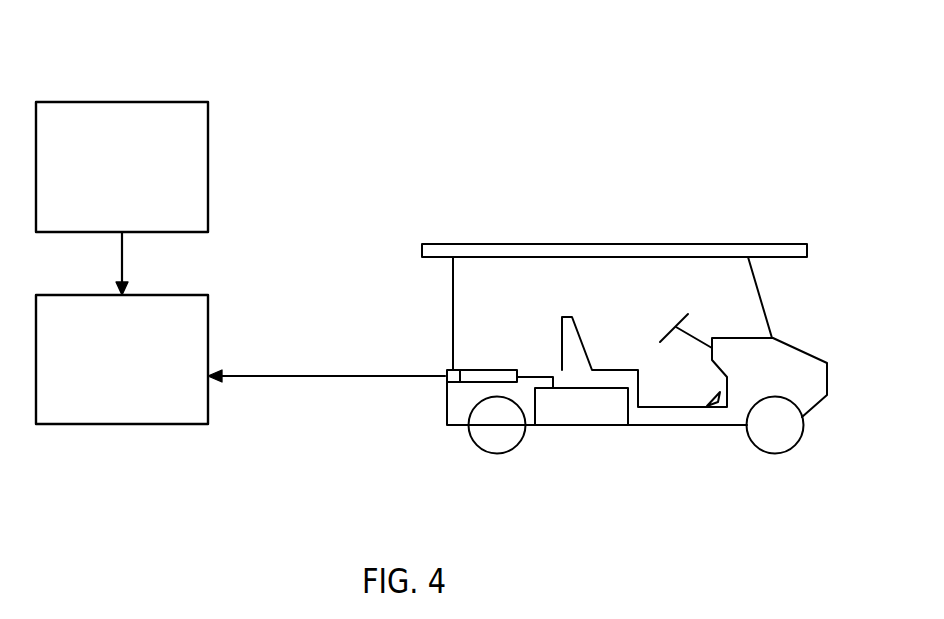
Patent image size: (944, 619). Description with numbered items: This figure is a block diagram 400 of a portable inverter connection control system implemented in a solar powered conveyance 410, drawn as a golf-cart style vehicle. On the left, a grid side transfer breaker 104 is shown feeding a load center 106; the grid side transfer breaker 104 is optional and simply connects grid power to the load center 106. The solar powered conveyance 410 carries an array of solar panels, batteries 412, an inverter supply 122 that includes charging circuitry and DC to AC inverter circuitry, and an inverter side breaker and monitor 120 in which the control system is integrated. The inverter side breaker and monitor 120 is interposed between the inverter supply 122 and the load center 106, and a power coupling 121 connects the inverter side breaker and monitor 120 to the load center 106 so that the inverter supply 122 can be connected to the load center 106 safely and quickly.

The block diagram 400 is at (486, 72).
The grid side transfer breaker 104 is at (208, 167).
The load center 106 is at (208, 312).
The power coupling 121 is at (347, 376).
The inverter side breaker and monitor 120 is at (447, 376).
The inverter supply 122 is at (478, 369).
The solar powered conveyance 410 is at (778, 338).
The batteries 412 is at (740, 243).